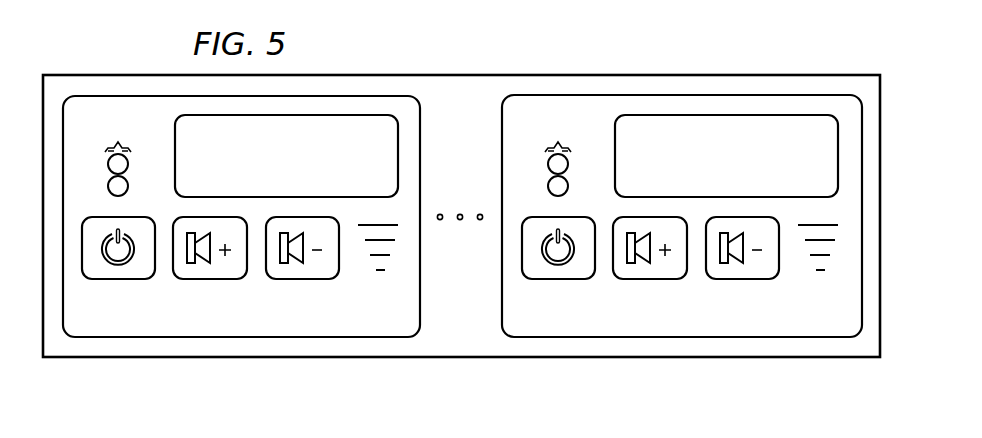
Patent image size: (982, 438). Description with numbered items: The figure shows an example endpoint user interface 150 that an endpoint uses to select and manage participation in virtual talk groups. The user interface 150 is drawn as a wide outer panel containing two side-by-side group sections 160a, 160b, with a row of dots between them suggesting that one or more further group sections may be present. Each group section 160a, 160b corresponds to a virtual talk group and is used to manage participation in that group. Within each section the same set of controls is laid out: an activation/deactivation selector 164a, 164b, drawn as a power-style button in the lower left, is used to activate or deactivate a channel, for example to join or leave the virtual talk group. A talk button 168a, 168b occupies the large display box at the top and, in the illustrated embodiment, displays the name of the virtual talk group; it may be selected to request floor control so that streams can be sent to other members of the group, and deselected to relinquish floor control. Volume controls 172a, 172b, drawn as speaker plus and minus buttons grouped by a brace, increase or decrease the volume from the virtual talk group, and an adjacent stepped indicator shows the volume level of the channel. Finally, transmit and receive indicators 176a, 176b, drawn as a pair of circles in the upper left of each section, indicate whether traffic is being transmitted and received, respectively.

The endpoint user interface 150 is at (571, 75).
The group section 160a is at (421, 179).
The group section 160b is at (649, 216).
The activation/deactivation selector 164a is at (122, 281).
The activation/deactivation selector 164b is at (559, 272).
The talk button 168a is at (373, 170).
The talk button 168b is at (726, 156).
The volume controls 172a is at (176, 289).
The volume controls 172b is at (725, 274).
The transmit and receive indicators 176a is at (118, 156).
The transmit and receive indicators 176b is at (557, 156).